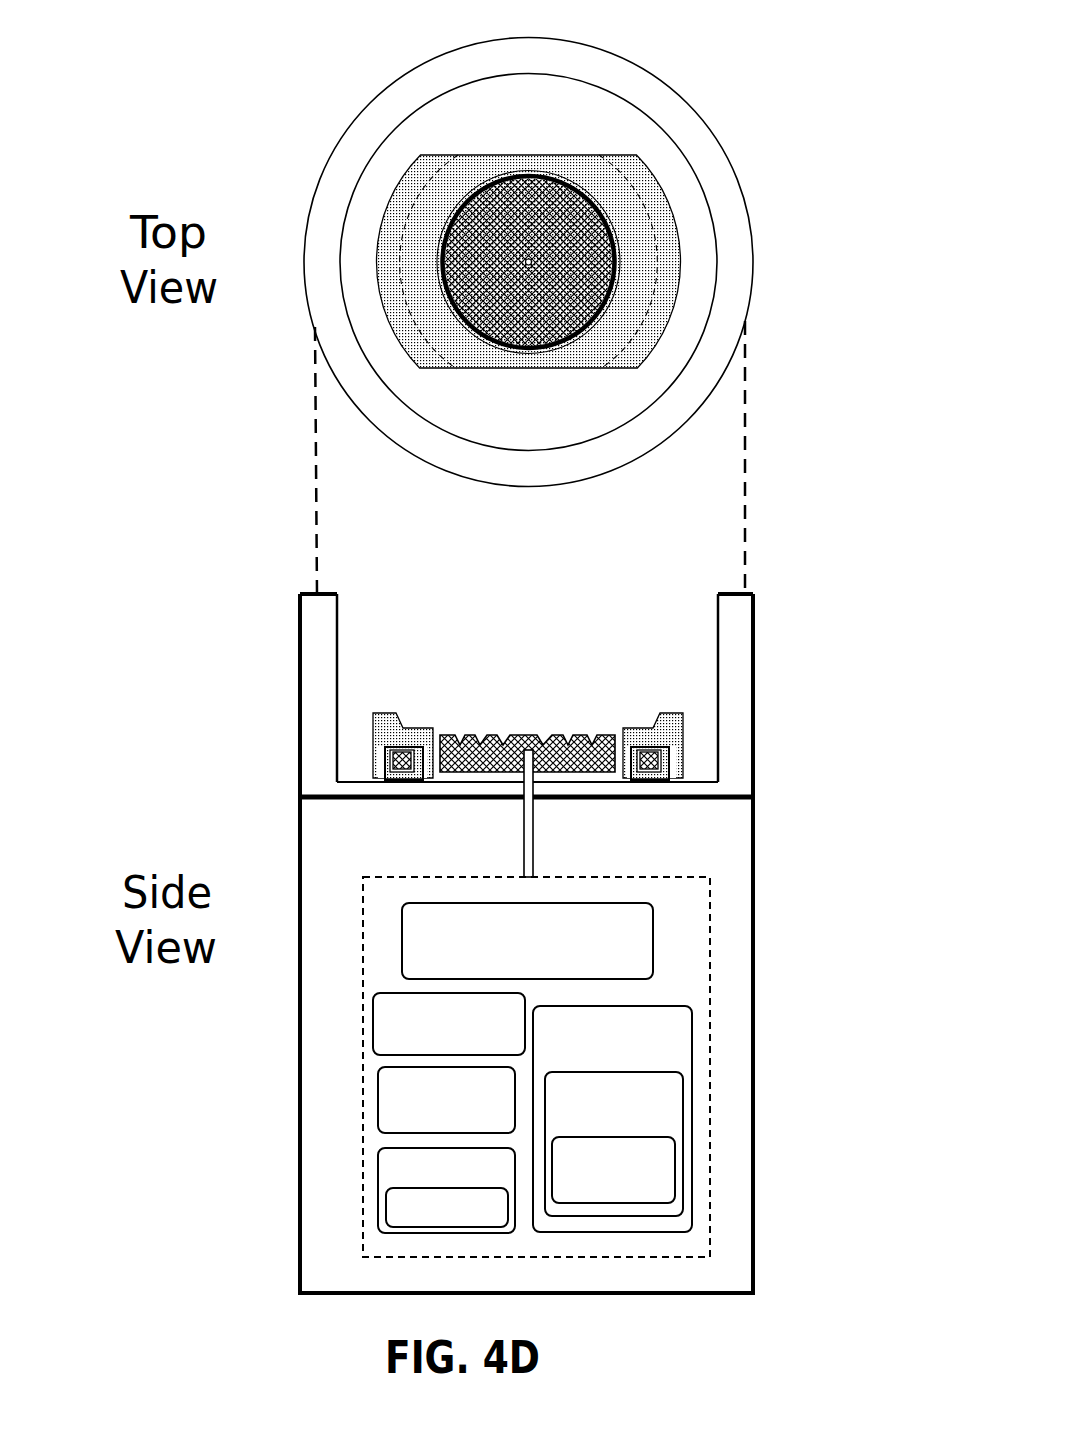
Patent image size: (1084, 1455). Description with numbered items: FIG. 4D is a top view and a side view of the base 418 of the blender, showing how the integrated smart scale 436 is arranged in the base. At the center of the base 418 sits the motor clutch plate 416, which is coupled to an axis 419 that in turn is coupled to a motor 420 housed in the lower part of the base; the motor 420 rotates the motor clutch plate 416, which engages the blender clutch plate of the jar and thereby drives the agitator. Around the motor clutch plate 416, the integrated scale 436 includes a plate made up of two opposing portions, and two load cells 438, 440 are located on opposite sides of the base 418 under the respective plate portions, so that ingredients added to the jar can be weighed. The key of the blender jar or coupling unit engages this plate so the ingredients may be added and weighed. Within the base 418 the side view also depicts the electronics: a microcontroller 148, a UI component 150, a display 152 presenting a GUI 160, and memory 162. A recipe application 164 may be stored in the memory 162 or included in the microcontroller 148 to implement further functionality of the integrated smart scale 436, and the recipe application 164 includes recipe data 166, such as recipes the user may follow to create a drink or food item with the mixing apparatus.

The base 418 is at (545, 137).
The integrated smart scale 436 is at (645, 158).
The motor clutch plate 416 is at (584, 277).
The load cell 438 is at (400, 760).
The load cell 440 is at (650, 760).
The axis 419 is at (517, 852).
The motor 420 is at (512, 956).
The microcontroller 148 is at (434, 1044).
The UI component 150 is at (431, 1120).
The display 152 is at (489, 1175).
The GUI 160 is at (476, 1215).
The memory 162 is at (597, 1057).
The recipe application 164 is at (672, 1123).
The recipe data 166 is at (598, 1186).